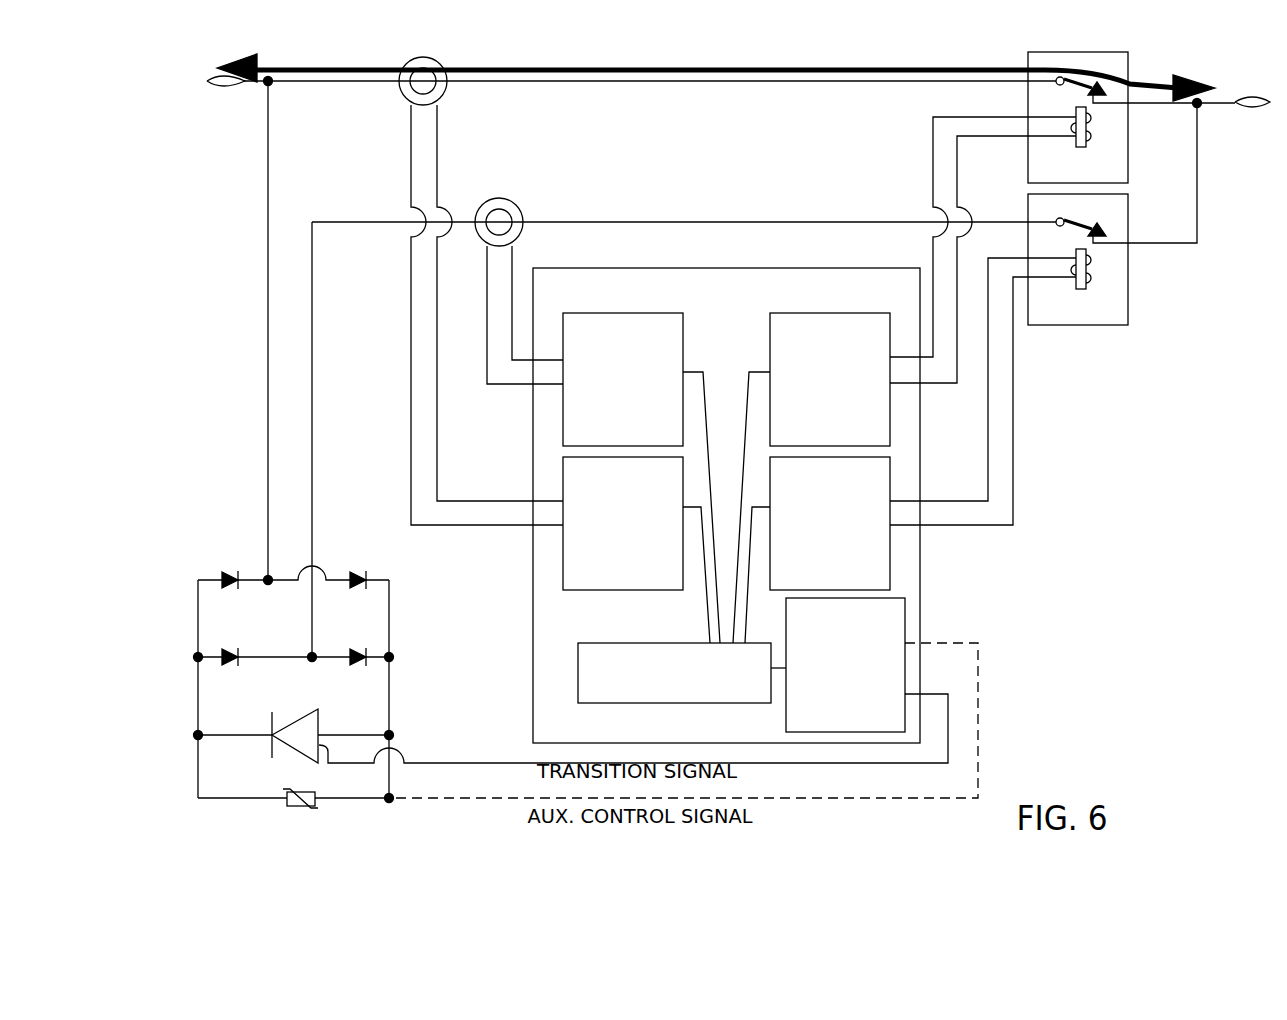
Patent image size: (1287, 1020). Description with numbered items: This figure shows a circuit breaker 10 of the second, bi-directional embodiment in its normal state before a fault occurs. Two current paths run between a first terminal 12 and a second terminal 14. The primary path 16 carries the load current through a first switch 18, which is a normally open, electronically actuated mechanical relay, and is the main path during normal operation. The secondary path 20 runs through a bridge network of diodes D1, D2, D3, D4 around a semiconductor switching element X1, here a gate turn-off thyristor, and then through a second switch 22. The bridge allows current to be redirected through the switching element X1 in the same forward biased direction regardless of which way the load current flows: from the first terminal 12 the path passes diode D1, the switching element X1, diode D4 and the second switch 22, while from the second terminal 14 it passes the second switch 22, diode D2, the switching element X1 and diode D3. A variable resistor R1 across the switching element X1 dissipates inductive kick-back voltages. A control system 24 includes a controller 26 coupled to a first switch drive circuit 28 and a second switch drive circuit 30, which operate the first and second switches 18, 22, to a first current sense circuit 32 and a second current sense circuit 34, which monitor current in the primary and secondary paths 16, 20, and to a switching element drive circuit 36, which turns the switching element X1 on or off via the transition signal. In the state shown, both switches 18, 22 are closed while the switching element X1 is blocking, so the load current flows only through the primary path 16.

The circuit breaker 10 is at (813, 45).
The first terminal 12 is at (220, 92).
The second terminal 14 is at (1258, 89).
The primary path 16 is at (651, 95).
The first switch 18 is at (1043, 217).
The secondary path 20 is at (686, 238).
The second switch 22 is at (1043, 314).
The control system 24 is at (726, 505).
The controller 26 is at (682, 673).
The first switch drive circuit 28 is at (811, 478).
The second switch drive circuit 30 is at (817, 550).
The first current sense circuit 32 is at (641, 478).
The second current sense circuit 34 is at (636, 550).
The switching element drive circuit 36 is at (845, 665).
The diode D1 is at (356, 571).
The diode D2 is at (356, 648).
The diode D3 is at (230, 571).
The diode D4 is at (230, 648).
The switching element X1 is at (293, 747).
The variable resistor R1 is at (303, 809).